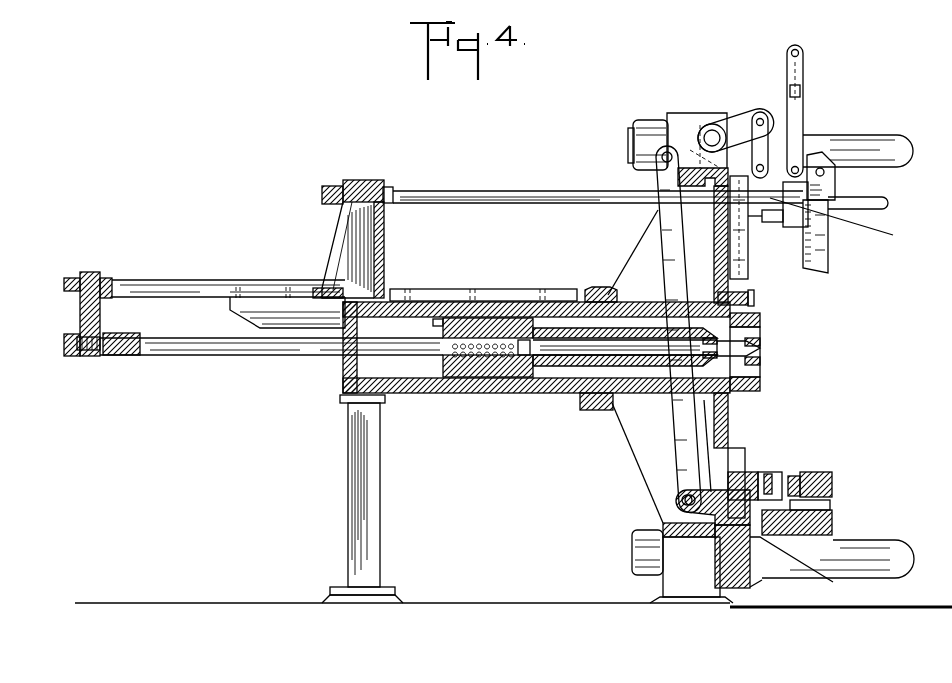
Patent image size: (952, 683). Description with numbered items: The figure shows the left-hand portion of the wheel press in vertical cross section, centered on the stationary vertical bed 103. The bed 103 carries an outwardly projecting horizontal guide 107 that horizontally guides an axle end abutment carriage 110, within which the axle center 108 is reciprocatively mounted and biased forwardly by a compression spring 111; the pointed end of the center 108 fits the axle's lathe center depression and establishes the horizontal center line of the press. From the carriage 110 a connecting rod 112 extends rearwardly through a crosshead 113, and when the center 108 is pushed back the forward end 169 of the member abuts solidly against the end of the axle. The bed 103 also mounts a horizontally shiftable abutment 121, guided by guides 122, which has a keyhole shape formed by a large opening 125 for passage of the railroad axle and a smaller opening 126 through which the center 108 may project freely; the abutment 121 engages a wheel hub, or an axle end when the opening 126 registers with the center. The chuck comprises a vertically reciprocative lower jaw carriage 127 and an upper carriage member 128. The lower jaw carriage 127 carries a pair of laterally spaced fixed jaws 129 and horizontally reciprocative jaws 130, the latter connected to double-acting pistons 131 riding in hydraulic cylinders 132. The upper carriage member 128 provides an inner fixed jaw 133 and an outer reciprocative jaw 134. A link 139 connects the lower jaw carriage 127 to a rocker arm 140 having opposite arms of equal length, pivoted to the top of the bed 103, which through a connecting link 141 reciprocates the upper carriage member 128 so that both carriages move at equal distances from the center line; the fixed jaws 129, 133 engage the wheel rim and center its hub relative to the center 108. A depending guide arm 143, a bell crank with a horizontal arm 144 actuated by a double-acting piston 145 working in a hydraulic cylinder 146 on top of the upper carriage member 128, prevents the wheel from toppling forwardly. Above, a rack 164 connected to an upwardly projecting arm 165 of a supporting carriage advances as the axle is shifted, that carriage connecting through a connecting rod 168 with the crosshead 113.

The stationary vertical bed 103 is at (713, 260).
The horizontal guide 107 is at (420, 394).
The axle center 108 is at (761, 357).
The axle end abutment carriage 110 is at (551, 393).
The compression spring 111 is at (481, 333).
The connecting rod 112 is at (178, 350).
The crosshead 113 is at (78, 310).
The horizontally shiftable abutment 121 is at (750, 317).
The guides 122 is at (750, 297).
The large opening 125 is at (758, 380).
The small opening 126 is at (762, 344).
The lower jaw carriage 127 is at (806, 548).
The upper carriage member 128 is at (848, 225).
The fixed jaws 129 is at (775, 472).
The horizontally reciprocative jaws 130 is at (797, 496).
The double-acting pistons 131 is at (762, 578).
The hydraulic cylinders 132 is at (743, 530).
The inner fixed jaw 133 is at (775, 223).
The outer reciprocative jaw 134 is at (835, 192).
The link 139 is at (665, 233).
The rocker arm 140 is at (743, 118).
The connecting link 141 is at (764, 143).
The depending guide arm 143 is at (828, 240).
The horizontal arm 144 is at (813, 165).
The double-acting piston 145 is at (797, 130).
The hydraulic cylinder 146 is at (808, 155).
The rack 164 is at (477, 193).
The arm 165 is at (384, 246).
The connecting rod 168 is at (182, 288).
The forward end 169 is at (672, 403).